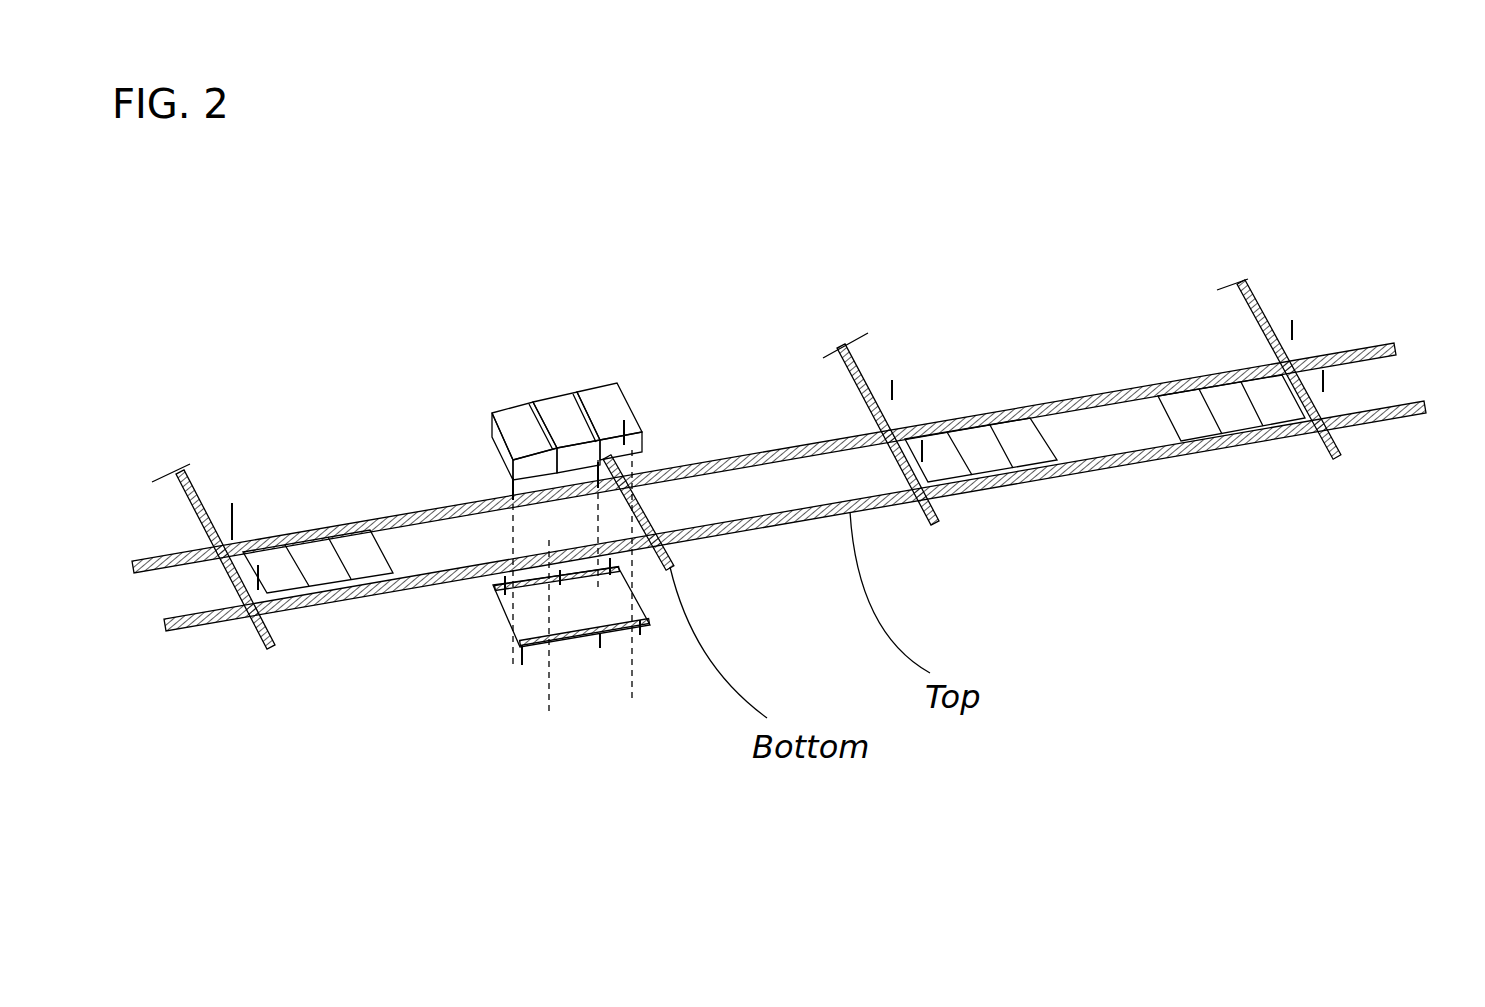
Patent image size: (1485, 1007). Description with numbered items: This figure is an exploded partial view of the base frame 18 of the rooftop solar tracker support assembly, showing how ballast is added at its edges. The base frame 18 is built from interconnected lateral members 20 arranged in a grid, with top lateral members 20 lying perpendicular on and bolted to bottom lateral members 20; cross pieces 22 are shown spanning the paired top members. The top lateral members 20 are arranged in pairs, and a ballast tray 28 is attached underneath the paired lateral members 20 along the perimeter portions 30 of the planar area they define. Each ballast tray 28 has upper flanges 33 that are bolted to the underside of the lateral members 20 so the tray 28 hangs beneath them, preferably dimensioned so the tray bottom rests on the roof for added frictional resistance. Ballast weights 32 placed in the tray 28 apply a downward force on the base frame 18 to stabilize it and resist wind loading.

The base frame 18 is at (798, 417).
The lateral members 20 is at (727, 452).
The cross member 22 is at (200, 462).
The ballast tray 28 is at (525, 700).
The perimeter portions 30 is at (1318, 465).
The ballast weights 32 is at (607, 393).
The upper flanges 33 is at (533, 645).